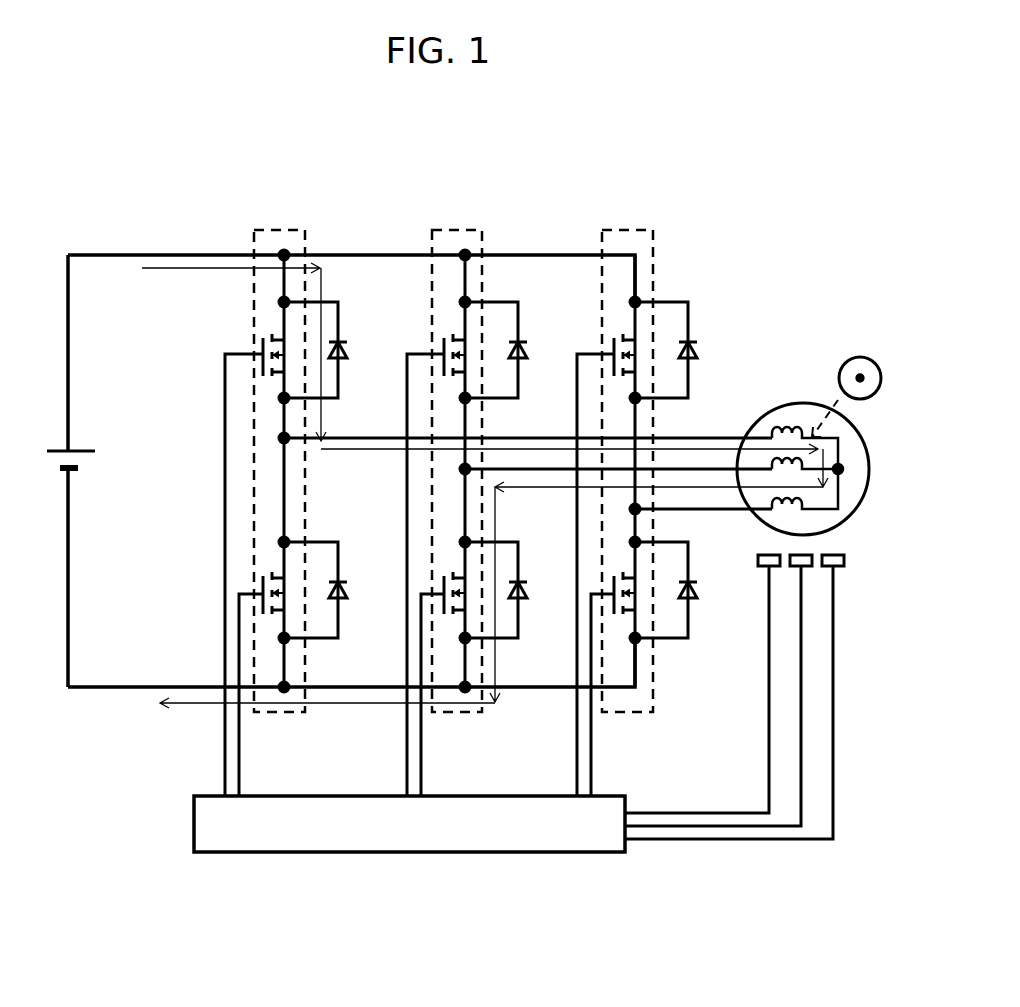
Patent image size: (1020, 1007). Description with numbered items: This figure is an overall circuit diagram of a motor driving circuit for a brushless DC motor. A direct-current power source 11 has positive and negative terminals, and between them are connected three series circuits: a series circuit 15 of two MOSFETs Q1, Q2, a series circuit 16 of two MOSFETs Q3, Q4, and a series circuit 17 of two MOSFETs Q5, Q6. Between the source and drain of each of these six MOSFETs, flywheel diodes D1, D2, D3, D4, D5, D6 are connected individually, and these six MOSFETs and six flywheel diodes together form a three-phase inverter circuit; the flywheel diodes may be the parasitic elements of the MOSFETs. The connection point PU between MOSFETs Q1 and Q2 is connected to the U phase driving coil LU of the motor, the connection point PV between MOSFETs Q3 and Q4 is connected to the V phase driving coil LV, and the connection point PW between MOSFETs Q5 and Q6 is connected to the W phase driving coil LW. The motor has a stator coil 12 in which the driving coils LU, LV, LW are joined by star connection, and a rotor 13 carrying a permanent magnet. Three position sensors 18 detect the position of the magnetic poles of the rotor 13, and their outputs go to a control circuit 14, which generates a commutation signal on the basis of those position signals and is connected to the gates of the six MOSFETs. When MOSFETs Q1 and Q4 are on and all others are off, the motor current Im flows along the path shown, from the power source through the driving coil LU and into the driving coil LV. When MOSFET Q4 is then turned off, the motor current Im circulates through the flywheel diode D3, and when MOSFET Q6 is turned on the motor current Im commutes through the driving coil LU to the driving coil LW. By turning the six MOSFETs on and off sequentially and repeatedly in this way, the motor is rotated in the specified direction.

The direct-current power source 11 is at (82, 450).
The stator coil 12 is at (811, 460).
The rotor 13 is at (853, 358).
The control circuit 14 is at (615, 793).
The series circuit 15 is at (268, 230).
The series circuit 16 is at (462, 230).
The series circuit 17 is at (627, 232).
The position sensors 18 is at (806, 562).
The MOSFET Q1 is at (262, 343).
The MOSFET Q2 is at (260, 593).
The MOSFET Q3 is at (442, 347).
The MOSFET Q4 is at (442, 593).
The MOSFET Q5 is at (612, 348).
The MOSFET Q6 is at (613, 597).
The flywheel diode D1 is at (345, 353).
The flywheel diode D2 is at (345, 590).
The flywheel diode D3 is at (523, 353).
The flywheel diode D4 is at (523, 592).
The flywheel diode D5 is at (696, 345).
The flywheel diode D6 is at (685, 593).
The connection point PU is at (284, 438).
The connection point PV is at (465, 469).
The connection point PW is at (635, 509).
The U phase driving coil LU is at (800, 433).
The V phase driving coil LV is at (772, 458).
The W phase driving coil LW is at (778, 509).
The motor current Im is at (181, 268).